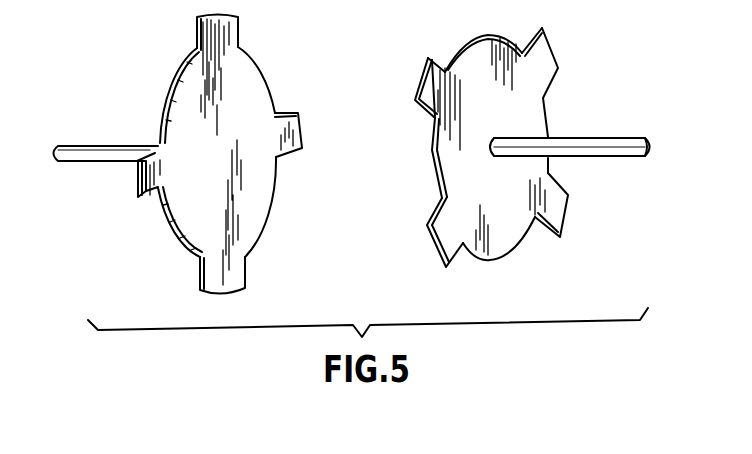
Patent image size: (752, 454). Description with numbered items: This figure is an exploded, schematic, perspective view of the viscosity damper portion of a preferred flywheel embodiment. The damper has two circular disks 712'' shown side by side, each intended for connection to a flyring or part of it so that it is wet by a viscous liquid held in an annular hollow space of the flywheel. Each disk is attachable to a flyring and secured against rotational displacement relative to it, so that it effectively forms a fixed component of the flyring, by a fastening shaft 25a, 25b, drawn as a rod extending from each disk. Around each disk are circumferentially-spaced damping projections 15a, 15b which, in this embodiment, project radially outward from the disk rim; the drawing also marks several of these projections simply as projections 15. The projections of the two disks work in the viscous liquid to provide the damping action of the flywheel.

The circular disk 712'' is at (360, 152).
The damping projection 15a is at (233, 31).
The tab 15 is at (157, 190).
The damping projection 15b is at (426, 62).
The fastening shaft 25a is at (95, 146).
The fastening shaft 25b is at (612, 137).